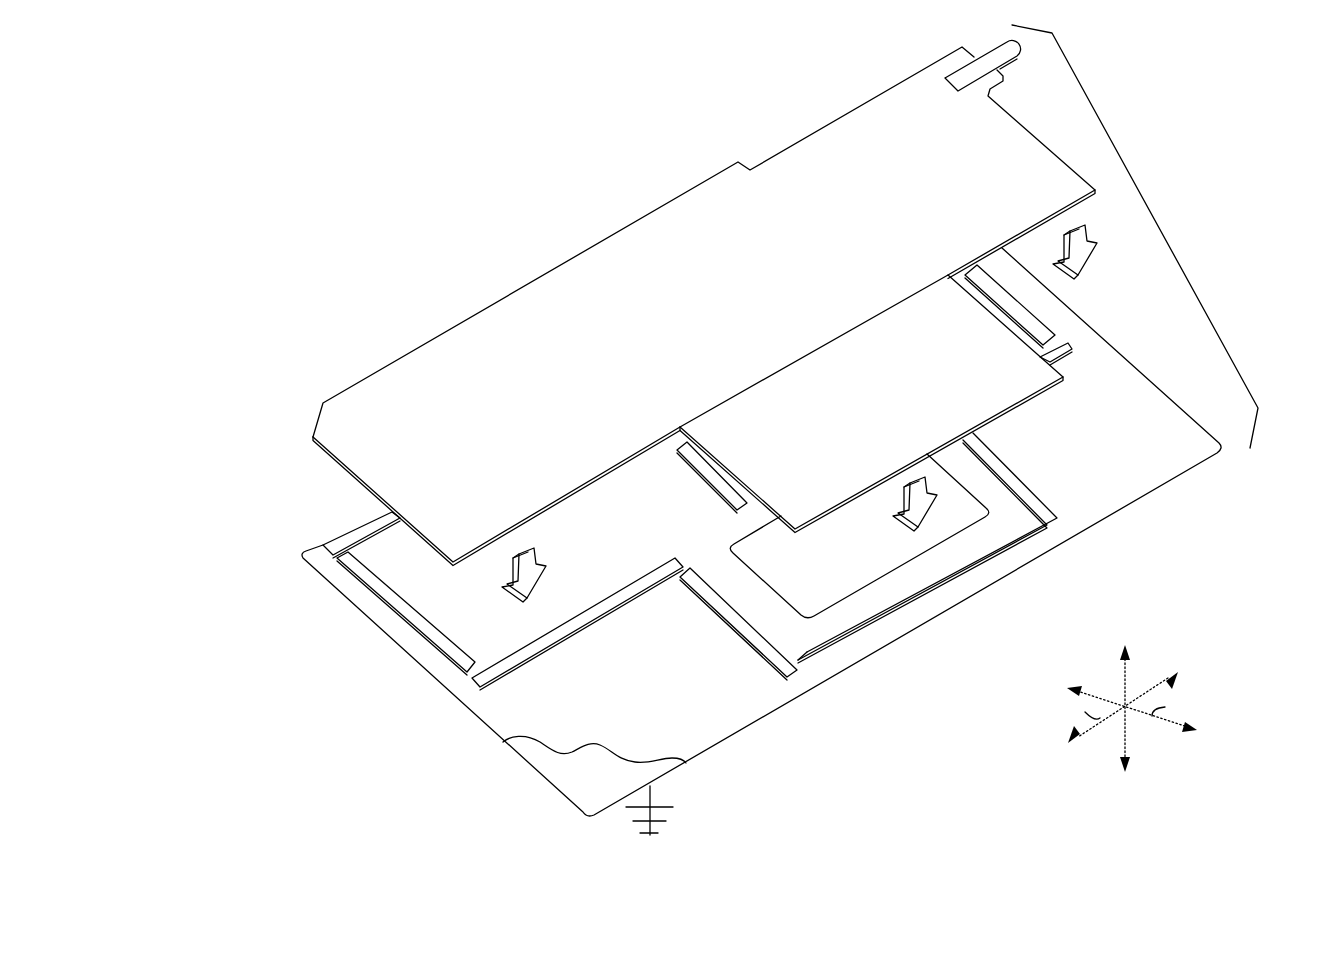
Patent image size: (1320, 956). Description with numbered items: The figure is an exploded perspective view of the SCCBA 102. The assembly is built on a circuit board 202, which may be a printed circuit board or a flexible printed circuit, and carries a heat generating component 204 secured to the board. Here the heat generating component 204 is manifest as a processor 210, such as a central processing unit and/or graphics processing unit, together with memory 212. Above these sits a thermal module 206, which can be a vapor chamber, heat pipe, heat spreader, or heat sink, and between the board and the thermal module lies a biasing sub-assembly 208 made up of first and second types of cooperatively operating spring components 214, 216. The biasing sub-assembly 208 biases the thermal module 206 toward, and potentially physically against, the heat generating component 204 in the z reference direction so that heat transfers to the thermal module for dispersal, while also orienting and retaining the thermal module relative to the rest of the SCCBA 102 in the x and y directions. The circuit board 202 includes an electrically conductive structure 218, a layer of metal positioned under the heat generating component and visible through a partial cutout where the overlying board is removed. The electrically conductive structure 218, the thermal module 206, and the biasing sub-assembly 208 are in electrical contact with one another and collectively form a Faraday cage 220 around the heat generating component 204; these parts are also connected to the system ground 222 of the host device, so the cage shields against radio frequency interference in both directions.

The SCCBA 102 is at (333, 214).
The circuit board 202 is at (487, 740).
The heat generating component 204 is at (712, 540).
The thermal module 206 is at (318, 405).
The biasing sub-assembly 208 is at (601, 477).
The processor 210 is at (852, 588).
The memory 212 is at (708, 479).
The first type spring component 214 is at (360, 522).
The second type spring component 216 is at (393, 608).
The electrically conductive structure 218 is at (575, 777).
The Faraday cage 220 is at (1103, 128).
The system ground 222 is at (652, 803).